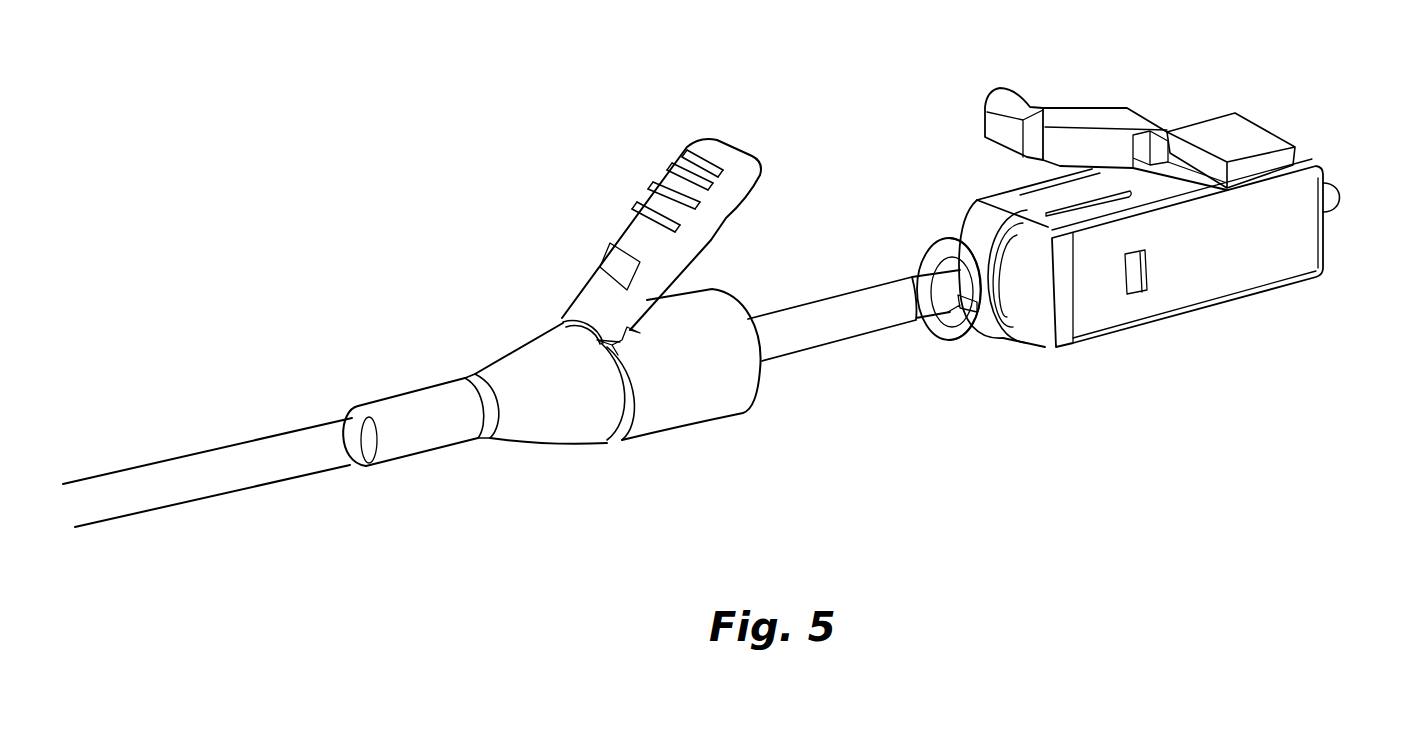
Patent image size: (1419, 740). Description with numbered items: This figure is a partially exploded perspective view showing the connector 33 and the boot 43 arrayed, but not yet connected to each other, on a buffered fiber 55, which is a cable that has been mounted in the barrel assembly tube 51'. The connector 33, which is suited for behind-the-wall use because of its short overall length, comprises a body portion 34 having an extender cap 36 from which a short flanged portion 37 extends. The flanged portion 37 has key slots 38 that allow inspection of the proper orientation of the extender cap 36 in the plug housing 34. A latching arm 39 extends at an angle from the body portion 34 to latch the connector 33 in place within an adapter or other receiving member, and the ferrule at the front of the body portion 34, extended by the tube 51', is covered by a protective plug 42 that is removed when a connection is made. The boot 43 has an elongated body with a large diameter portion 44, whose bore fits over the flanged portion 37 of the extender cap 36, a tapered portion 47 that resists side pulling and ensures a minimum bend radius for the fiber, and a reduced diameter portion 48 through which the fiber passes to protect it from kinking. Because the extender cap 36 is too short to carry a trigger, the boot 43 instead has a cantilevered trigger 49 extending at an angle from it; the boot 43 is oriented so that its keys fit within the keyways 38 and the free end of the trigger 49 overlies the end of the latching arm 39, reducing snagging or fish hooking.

The connector 33 is at (1185, 393).
The body portion 34 is at (1202, 285).
The extender cap 36 is at (1050, 313).
The flanged portion 37 is at (938, 245).
The key slots 38 is at (973, 305).
The latching arm 39 is at (1063, 115).
The protective plug 42 is at (1338, 193).
The boot 43 is at (641, 513).
The large diameter portion 44 is at (682, 407).
The tapered portion 47 is at (545, 422).
The reduced diameter portion 48 is at (422, 442).
The cantilevered trigger 49 is at (698, 148).
The barrel assembly tube 51' is at (854, 283).
The buffered fiber 55 is at (245, 448).